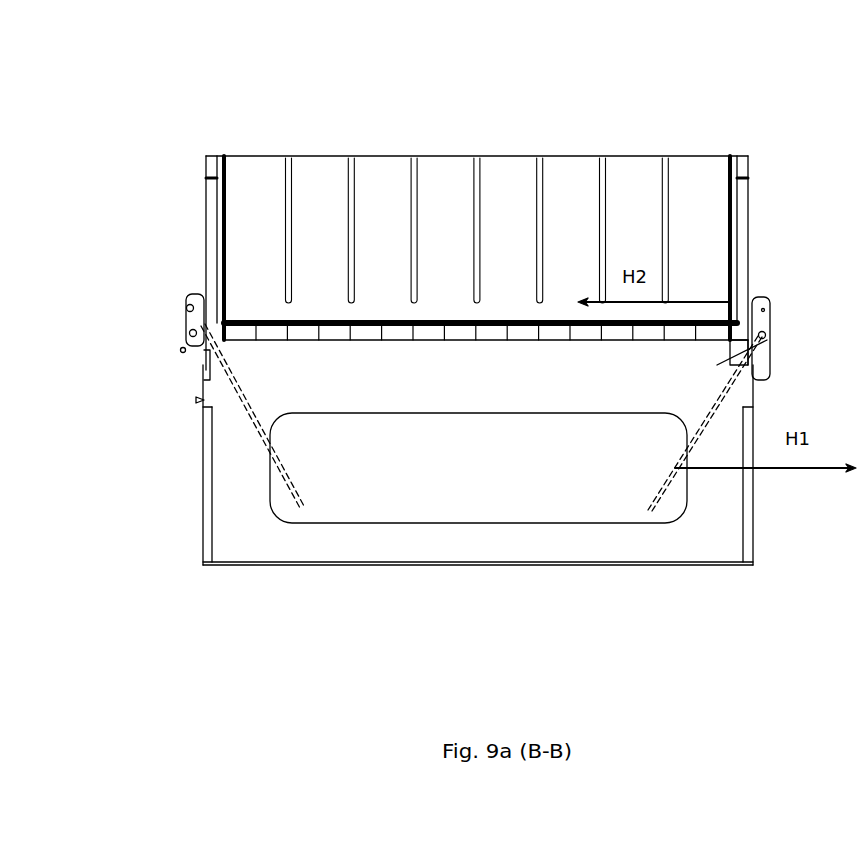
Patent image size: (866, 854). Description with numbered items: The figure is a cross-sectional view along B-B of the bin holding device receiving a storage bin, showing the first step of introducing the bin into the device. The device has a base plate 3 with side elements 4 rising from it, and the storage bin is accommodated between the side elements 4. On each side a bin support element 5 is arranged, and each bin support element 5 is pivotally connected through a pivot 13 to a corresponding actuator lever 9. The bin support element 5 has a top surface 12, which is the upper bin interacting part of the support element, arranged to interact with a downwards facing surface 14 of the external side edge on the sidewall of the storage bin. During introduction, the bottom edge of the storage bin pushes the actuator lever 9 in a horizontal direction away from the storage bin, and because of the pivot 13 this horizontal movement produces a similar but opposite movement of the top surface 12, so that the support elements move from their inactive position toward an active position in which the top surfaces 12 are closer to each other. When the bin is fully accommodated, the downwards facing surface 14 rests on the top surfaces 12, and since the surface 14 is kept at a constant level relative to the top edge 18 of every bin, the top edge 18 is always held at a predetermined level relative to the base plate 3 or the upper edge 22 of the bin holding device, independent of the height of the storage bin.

The base plate 3 is at (610, 562).
The side element 4 is at (203, 517).
The bin support element 5 is at (203, 347).
The actuator lever 9 is at (283, 468).
The top surface 12 is at (195, 298).
The pivot 13 is at (190, 330).
The downwards facing surface 14 is at (208, 187).
The top edge 18 is at (627, 155).
The upper edge 22 is at (753, 297).